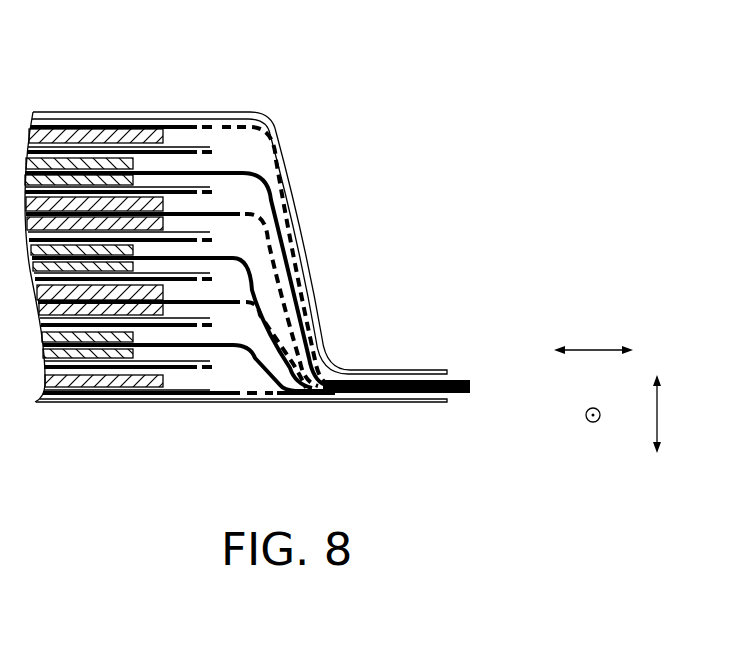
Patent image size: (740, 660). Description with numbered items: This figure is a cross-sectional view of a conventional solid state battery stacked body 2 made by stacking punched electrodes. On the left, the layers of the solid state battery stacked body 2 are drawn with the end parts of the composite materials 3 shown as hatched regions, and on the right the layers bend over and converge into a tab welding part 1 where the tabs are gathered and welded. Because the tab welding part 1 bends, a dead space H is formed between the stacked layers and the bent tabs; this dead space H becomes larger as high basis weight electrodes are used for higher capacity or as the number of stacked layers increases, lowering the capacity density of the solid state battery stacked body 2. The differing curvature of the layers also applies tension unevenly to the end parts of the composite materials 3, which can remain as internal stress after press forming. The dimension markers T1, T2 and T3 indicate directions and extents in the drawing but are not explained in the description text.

The tab welding part 1 is at (311, 180).
The solid state battery stacked body 2 is at (134, 109).
The composite materials 3 is at (158, 223).
The dead space H is at (245, 194).
The dimension T1 is at (593, 338).
The dimension T2 is at (589, 422).
The dimension T3 is at (675, 414).